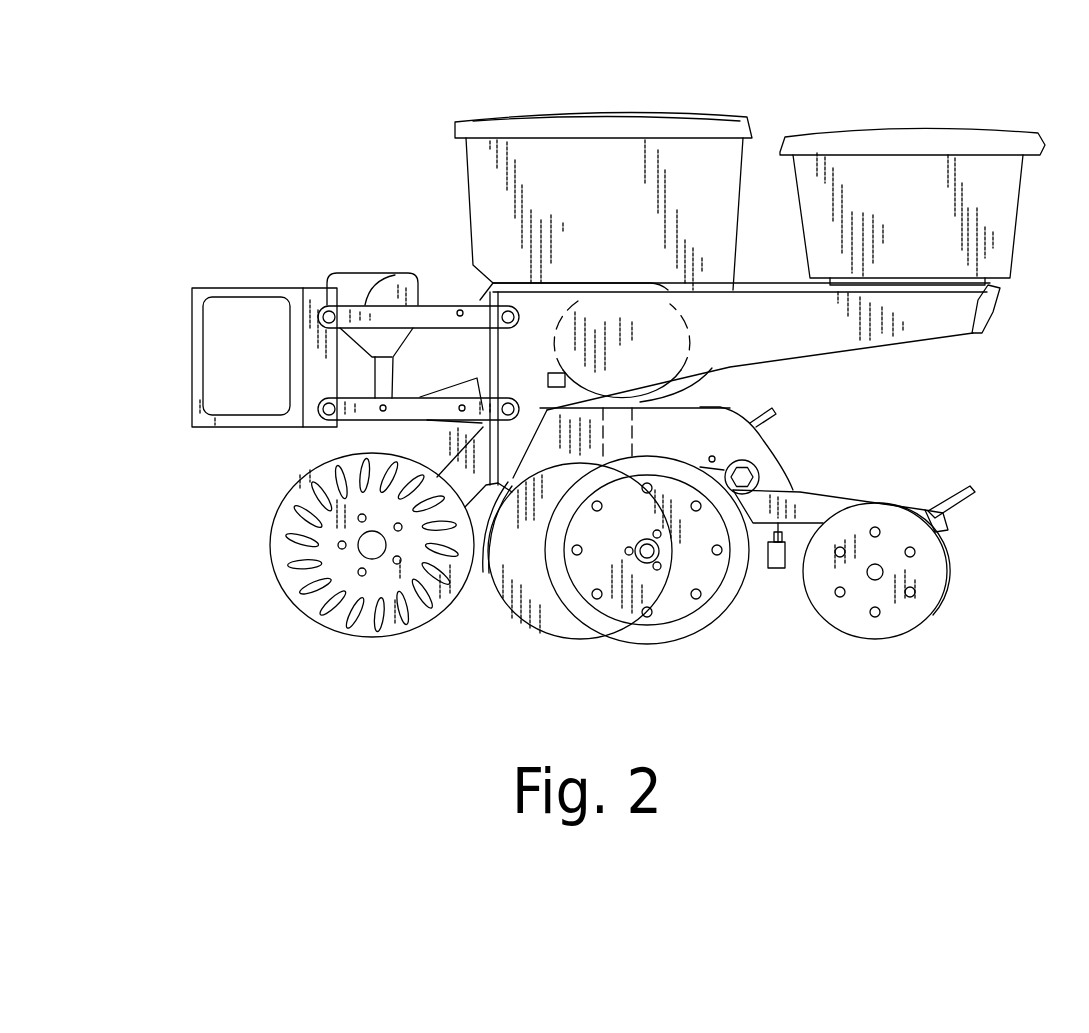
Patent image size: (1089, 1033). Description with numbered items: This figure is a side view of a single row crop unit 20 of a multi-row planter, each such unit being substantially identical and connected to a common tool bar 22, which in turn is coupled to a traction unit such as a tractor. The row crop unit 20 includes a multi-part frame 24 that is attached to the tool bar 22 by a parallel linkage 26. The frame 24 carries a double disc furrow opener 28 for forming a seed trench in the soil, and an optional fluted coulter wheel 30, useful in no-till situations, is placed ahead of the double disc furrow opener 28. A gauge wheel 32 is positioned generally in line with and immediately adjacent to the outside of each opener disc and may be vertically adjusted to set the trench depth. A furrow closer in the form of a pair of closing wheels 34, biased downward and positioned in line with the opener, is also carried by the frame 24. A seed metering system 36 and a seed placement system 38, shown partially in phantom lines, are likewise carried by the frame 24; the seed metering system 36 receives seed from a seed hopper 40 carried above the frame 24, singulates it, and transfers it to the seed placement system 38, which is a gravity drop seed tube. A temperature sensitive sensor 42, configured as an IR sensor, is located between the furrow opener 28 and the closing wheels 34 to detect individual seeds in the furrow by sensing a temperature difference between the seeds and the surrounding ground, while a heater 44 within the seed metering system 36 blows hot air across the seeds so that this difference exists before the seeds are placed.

The row crop unit 20 is at (340, 175).
The tool bar 22 is at (227, 290).
The multi-part frame 24 is at (782, 462).
The parallel linkage 26 is at (425, 318).
The double disc furrow opener 28 is at (562, 642).
The fluted coulter wheel 30 is at (272, 545).
The gauge wheel 32 is at (724, 628).
The closing wheels 34 is at (916, 635).
The seed metering system 36 is at (683, 302).
The seed placement system 38 is at (632, 447).
The seed hopper 40 is at (658, 112).
The temperature sensitive sensor 42 is at (776, 568).
The heater 44 is at (548, 374).